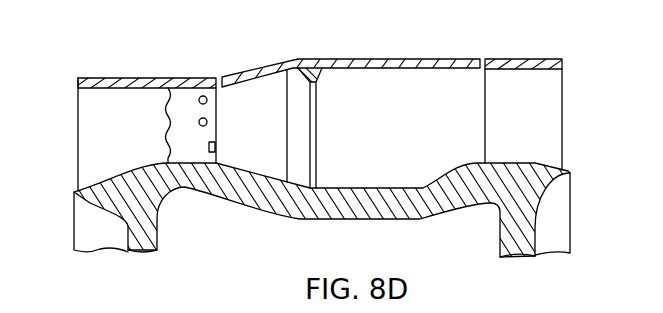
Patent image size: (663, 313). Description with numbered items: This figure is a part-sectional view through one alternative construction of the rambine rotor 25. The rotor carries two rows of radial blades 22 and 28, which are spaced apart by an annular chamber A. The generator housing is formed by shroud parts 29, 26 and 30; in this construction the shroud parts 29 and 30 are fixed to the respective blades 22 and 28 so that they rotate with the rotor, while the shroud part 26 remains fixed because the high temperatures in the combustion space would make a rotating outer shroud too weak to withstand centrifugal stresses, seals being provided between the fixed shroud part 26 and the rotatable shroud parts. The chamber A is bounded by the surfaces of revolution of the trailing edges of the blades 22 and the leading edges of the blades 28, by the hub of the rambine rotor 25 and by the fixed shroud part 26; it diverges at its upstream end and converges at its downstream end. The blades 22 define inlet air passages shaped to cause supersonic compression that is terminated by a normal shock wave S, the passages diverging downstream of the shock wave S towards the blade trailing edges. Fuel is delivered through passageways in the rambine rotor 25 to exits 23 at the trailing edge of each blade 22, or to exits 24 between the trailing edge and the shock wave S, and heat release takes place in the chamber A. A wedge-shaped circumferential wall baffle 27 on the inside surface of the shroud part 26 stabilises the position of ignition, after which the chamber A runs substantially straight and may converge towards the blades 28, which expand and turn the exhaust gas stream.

The radial blades 22 is at (97, 133).
The exits 23 is at (208, 147).
The exits 24 is at (208, 122).
The rambine rotor 25 is at (303, 205).
The shroud part 26 is at (386, 58).
The circumferential wall baffle 27 is at (321, 66).
The radial blades 28 is at (545, 125).
The shroud part 29 is at (140, 82).
The shroud part 30 is at (539, 60).
The normal shock wave S is at (172, 120).
The annular chamber A is at (348, 138).